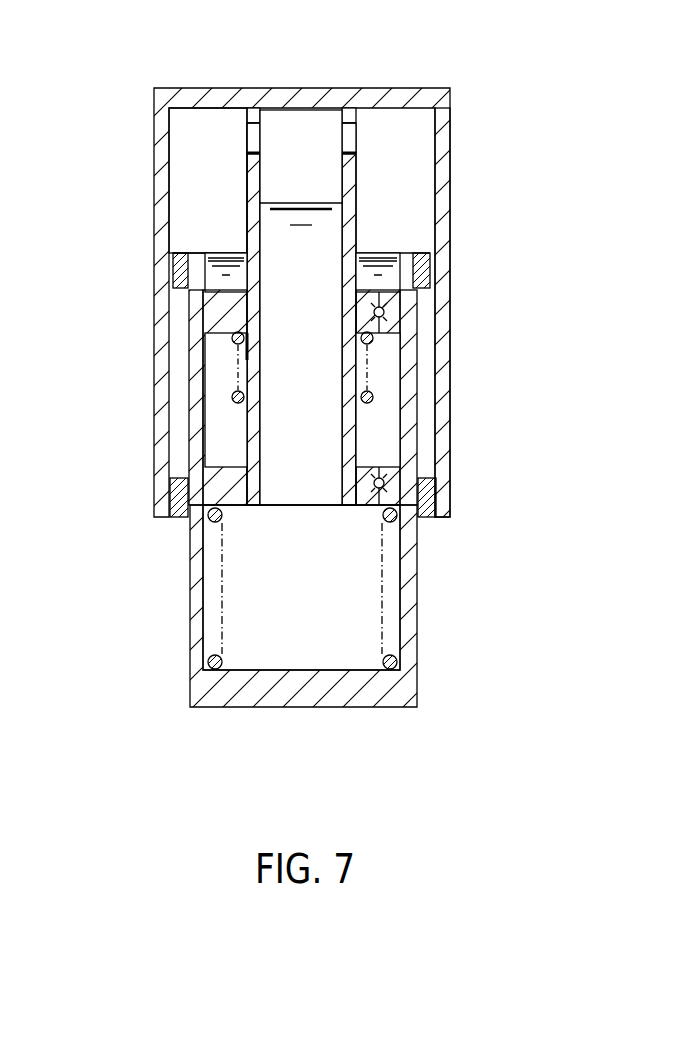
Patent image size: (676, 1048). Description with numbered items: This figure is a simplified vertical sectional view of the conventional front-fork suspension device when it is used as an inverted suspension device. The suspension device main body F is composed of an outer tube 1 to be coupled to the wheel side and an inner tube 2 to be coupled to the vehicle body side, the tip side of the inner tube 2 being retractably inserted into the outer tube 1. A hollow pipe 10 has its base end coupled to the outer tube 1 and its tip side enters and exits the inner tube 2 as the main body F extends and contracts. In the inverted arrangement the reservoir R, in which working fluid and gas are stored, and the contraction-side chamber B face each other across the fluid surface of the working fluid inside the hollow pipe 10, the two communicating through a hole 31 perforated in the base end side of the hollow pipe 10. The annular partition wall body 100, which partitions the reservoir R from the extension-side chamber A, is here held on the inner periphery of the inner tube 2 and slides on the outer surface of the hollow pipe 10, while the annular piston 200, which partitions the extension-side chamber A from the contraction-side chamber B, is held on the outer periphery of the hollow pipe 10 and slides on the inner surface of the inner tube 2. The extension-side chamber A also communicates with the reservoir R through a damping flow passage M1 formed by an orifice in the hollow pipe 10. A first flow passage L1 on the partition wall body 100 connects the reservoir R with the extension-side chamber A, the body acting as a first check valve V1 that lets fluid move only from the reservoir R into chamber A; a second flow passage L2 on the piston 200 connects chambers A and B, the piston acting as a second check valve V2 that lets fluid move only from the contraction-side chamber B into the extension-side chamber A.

The outer tube 1 is at (156, 158).
The inner tube 2 is at (417, 641).
The hollow pipe 10 is at (350, 228).
The hole 31 is at (253, 144).
The partition wall body 100 is at (183, 272).
The piston 200 is at (215, 450).
The suspension device main body F is at (452, 215).
The reservoir R is at (212, 197).
The contraction-side chamber B is at (313, 620).
The extension-side chamber A is at (387, 410).
The damping flow passage M1 is at (245, 424).
The first check valve V1 is at (384, 310).
The first flow passage L1 is at (397, 333).
The second check valve V2 is at (385, 482).
The second flow passage L2 is at (390, 495).